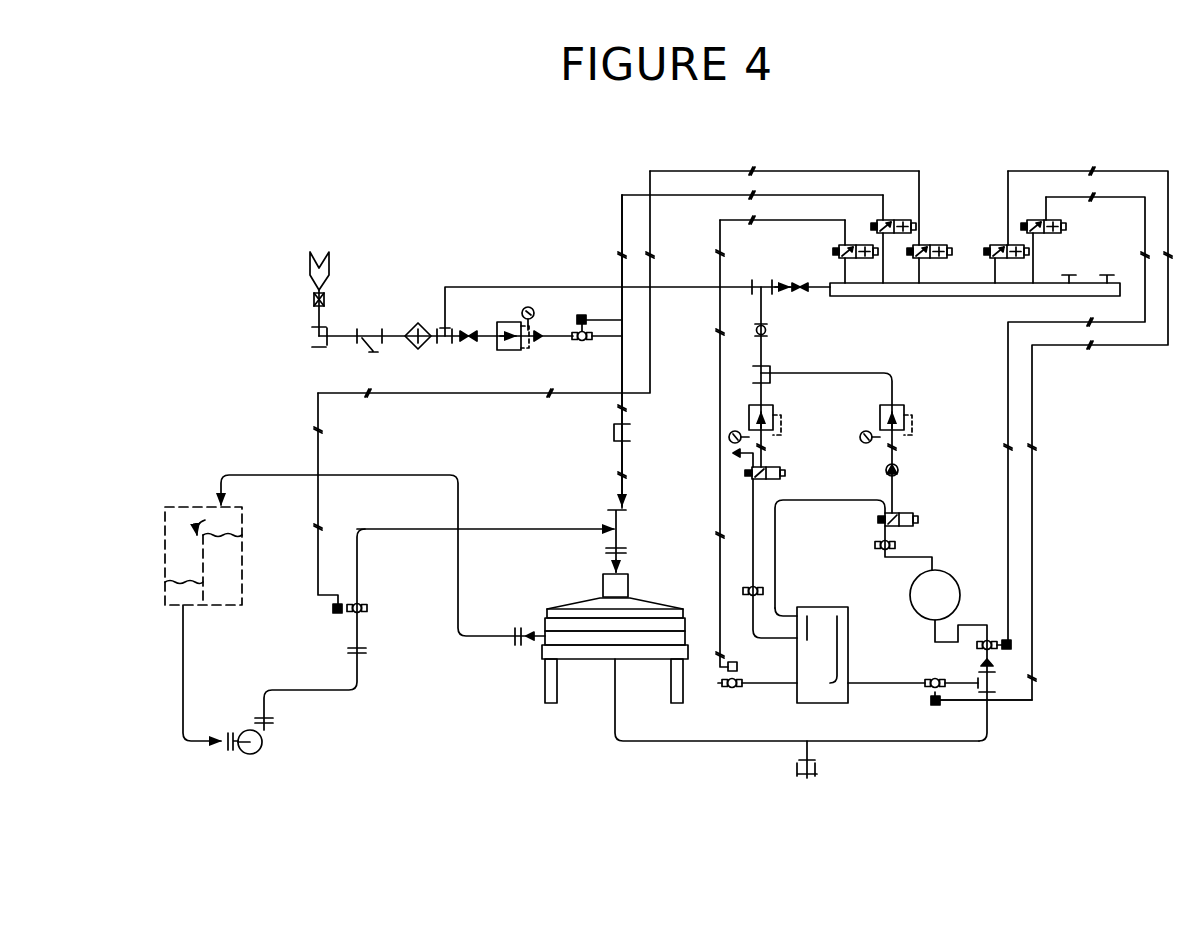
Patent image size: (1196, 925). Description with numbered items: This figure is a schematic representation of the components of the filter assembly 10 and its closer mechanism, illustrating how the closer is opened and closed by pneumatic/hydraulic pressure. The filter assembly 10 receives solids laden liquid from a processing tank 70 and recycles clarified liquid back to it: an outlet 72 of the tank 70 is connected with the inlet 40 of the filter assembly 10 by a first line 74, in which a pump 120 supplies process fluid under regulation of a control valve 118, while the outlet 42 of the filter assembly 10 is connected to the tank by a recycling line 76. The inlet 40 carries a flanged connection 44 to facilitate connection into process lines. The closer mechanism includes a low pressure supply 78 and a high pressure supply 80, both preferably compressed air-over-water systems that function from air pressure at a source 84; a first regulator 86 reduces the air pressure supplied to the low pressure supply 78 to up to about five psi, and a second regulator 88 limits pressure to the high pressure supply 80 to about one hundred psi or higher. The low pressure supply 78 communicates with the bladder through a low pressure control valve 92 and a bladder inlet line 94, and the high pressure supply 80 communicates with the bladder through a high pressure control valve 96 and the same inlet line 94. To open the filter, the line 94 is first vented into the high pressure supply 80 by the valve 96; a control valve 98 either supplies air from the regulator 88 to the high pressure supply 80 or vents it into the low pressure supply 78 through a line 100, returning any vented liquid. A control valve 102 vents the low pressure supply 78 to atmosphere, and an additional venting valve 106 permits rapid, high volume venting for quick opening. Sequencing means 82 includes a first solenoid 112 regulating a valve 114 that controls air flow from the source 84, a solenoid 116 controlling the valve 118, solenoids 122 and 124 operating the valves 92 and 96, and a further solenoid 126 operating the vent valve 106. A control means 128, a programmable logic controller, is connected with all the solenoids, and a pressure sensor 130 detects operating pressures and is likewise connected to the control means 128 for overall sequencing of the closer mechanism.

The filter assembly 10 is at (642, 607).
The inlet 40 is at (606, 565).
The outlet 42 is at (526, 647).
The flanged connection 44 is at (634, 547).
The processing tank 70 is at (178, 521).
The outlet of the tank 72 is at (190, 718).
The first line 74 is at (318, 685).
The recycling line 76 is at (292, 470).
The low pressure supply 78 is at (820, 627).
The high pressure supply 80 is at (930, 592).
The sequencing means 82 is at (978, 80).
The source 84 is at (318, 247).
The first regulator 86 is at (787, 405).
The second regulator 88 is at (918, 410).
The low pressure control valve 92 is at (918, 676).
The bladder inlet line 94 is at (608, 746).
The high pressure control valve 96 is at (995, 620).
The control valve 98 is at (914, 506).
The line 100 is at (795, 503).
The control valve 102 is at (777, 456).
The venting valve 106 is at (735, 690).
The first solenoid 112 is at (897, 213).
The valve 114 is at (577, 348).
The solenoid 116 is at (932, 240).
The valve 118 is at (368, 608).
The pump 120 is at (268, 755).
The solenoid 122 is at (990, 240).
The solenoid 124 is at (1038, 215).
The solenoid 126 is at (856, 240).
The control means 128 is at (920, 345).
The pressure sensor 130 is at (806, 780).